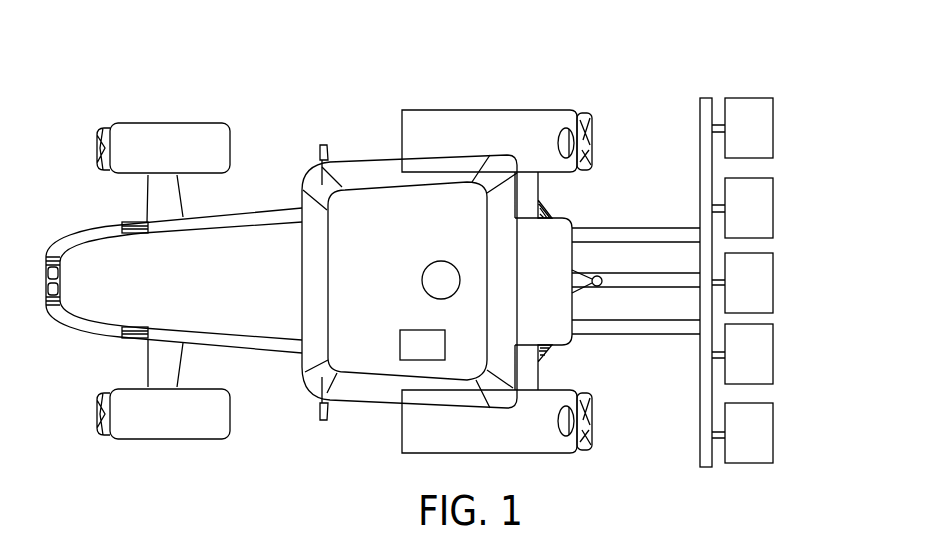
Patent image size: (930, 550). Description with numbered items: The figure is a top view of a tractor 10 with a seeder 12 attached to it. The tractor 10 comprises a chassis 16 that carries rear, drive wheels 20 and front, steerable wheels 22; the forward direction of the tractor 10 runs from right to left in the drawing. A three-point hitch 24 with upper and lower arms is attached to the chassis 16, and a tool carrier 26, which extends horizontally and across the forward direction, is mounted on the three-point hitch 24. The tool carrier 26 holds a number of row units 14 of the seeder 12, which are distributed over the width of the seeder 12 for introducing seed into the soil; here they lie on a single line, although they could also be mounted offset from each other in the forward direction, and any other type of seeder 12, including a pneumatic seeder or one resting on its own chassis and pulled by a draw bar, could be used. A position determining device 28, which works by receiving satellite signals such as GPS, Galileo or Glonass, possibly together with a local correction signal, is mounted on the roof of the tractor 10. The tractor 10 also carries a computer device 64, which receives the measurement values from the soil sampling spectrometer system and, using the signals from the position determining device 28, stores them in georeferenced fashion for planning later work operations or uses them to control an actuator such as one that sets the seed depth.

The tractor 10 is at (359, 112).
The seeder 12 is at (734, 233).
The row units 14 is at (773, 128).
The chassis 16 is at (260, 345).
The rear drive wheels 20 is at (585, 112).
The front steerable wheels 22 is at (98, 147).
The three-point hitch 24 is at (588, 232).
The tool carrier 26 is at (707, 215).
The position determining device 28 is at (443, 262).
The computer device 64 is at (422, 345).